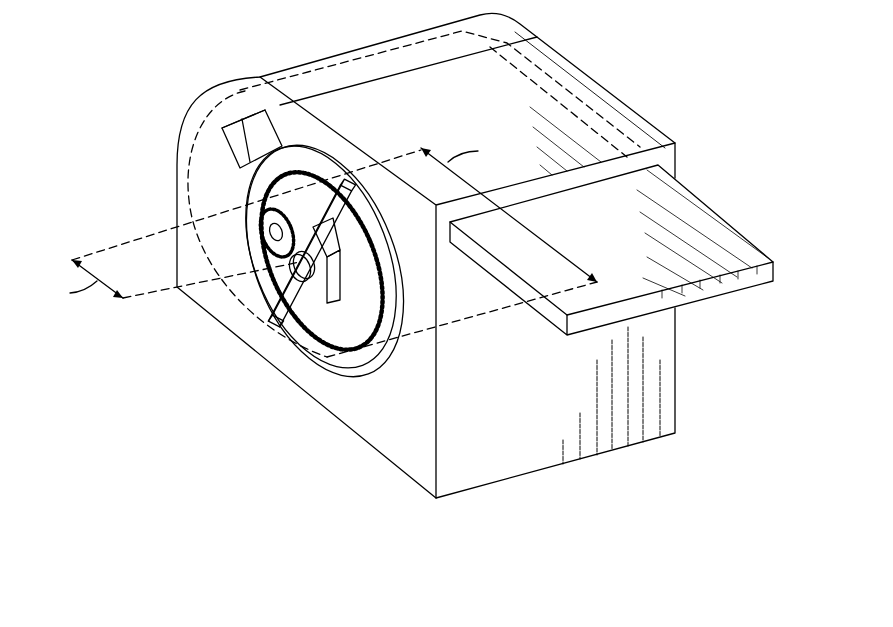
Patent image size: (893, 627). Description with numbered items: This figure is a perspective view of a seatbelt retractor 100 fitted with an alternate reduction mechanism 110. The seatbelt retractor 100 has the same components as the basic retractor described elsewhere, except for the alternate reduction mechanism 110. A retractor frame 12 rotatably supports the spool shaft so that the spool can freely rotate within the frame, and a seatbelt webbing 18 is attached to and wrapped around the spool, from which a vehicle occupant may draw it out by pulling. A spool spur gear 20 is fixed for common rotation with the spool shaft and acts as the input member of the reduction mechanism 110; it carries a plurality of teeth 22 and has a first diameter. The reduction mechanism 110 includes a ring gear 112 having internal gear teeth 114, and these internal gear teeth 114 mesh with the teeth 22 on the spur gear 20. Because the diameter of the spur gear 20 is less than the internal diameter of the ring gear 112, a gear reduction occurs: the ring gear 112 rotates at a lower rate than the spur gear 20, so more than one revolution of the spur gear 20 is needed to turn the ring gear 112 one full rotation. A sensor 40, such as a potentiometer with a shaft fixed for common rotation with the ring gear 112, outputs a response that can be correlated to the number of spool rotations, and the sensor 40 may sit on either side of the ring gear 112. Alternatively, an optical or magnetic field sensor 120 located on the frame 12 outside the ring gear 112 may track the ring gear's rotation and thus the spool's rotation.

The seatbelt retractor 100 is at (130, 28).
The retractor frame 12 is at (563, 465).
The seatbelt webbing 18 is at (703, 212).
The spool spur gear 20 is at (265, 232).
The teeth 22 is at (262, 198).
The sensor 40 is at (367, 374).
The alternate reduction mechanism 110 is at (216, 355).
The ring gear 112 is at (250, 172).
The internal gear teeth 114 is at (277, 268).
The optical sensor or magnetic field sensor 120 is at (220, 127).